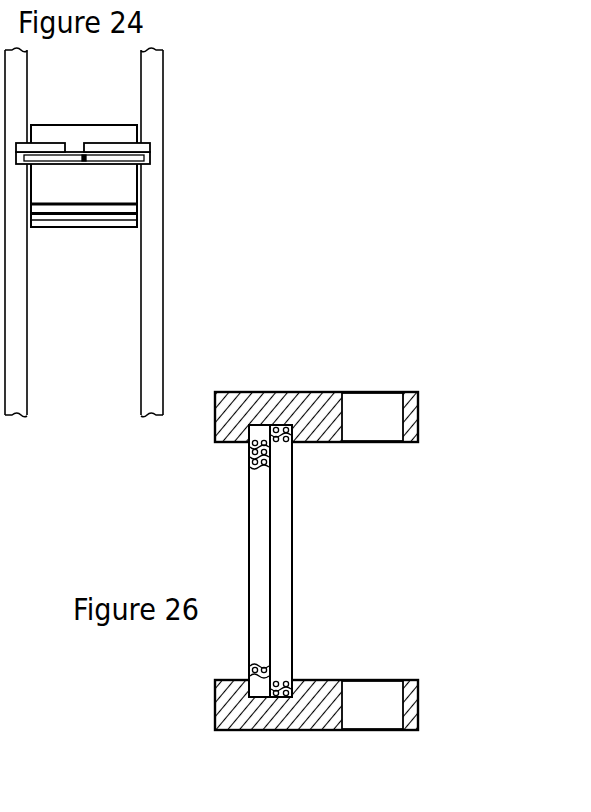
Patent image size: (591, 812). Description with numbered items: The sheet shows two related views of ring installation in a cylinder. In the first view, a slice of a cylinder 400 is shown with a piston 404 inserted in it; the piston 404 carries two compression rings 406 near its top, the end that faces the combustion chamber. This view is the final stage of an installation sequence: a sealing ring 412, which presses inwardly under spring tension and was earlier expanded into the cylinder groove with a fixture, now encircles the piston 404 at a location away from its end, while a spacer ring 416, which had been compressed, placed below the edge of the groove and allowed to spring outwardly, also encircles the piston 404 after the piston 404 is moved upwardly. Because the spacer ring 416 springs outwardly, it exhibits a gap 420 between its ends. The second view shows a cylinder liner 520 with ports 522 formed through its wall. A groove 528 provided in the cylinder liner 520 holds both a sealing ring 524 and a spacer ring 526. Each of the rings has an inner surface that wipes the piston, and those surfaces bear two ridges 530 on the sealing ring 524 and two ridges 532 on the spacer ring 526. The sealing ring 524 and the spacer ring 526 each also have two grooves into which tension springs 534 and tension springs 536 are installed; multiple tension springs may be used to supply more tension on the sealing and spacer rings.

In FIG. 24, the cylinder 400 is at (145, 320).
In FIG. 24, the piston 404 is at (103, 194).
In FIG. 24, the compression rings 406 is at (118, 215).
In FIG. 24, the sealing ring 412 is at (138, 160).
In FIG. 24, the spacer ring 416 is at (40, 147).
In FIG. 24, the gap 420 is at (79, 147).
In FIG. 26, the cylinder liner 520 is at (323, 433).
In FIG. 26, the ports 522 is at (375, 415).
In FIG. 26, the sealing ring 524 is at (285, 538).
In FIG. 26, the spacer ring 526 is at (257, 563).
In FIG. 26, the groove 528 is at (247, 443).
In FIG. 26, the ridges 530 is at (290, 447).
In FIG. 26, the ridges 532 is at (255, 470).
In FIG. 26, the tension springs 534 is at (292, 682).
In FIG. 26, the tension springs 536 is at (252, 677).